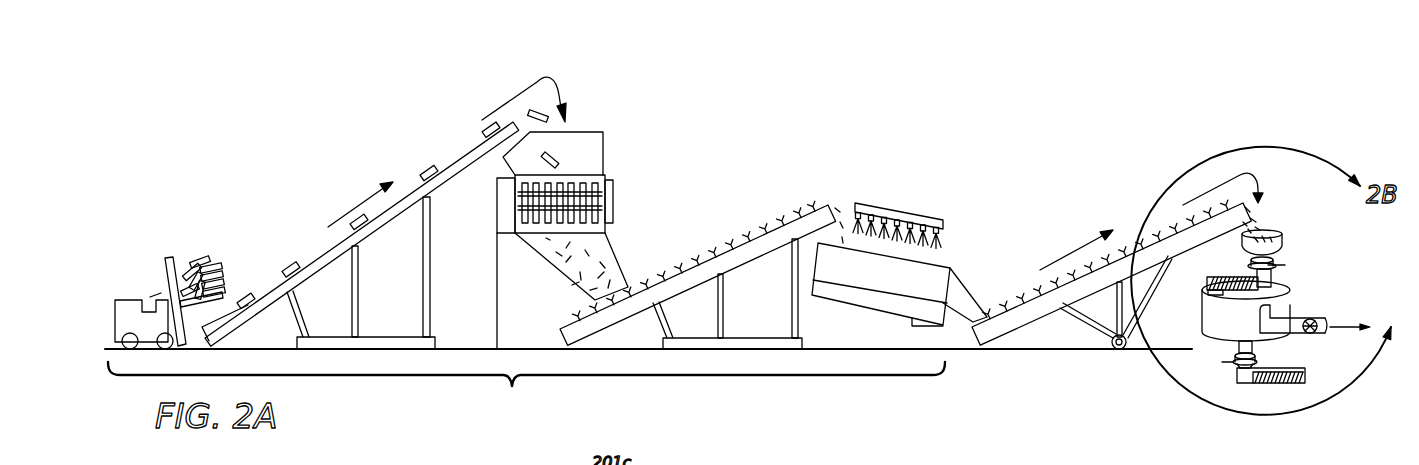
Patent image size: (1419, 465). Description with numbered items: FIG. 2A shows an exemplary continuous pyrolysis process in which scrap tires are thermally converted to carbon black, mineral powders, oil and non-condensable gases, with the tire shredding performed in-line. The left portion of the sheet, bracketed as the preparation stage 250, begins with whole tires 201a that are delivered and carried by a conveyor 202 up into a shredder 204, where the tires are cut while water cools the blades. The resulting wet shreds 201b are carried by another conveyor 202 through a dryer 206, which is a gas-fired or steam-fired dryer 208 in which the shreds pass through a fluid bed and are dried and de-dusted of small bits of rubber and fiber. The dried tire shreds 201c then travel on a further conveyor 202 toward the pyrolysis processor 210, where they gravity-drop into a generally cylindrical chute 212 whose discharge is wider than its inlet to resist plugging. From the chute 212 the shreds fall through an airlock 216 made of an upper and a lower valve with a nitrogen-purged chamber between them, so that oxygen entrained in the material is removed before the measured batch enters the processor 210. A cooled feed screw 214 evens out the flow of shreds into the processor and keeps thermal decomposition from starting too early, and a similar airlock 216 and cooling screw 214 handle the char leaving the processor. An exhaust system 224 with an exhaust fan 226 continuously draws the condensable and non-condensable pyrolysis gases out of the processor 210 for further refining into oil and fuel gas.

The tires 201a is at (200, 257).
The wet shreds 201b is at (692, 268).
The tire shreds 201c is at (1220, 203).
The conveyor 202 is at (468, 155).
The shredder 204 is at (624, 163).
The dryer 206 is at (842, 265).
The gas-fired or steam-fired dryer 208 is at (946, 209).
The pyrolysis processor 210 is at (1204, 312).
The chute 212 is at (1283, 232).
The feed screw 214 is at (1286, 384).
The airlock 216 is at (1253, 266).
The exhaust system 224 is at (1285, 325).
The exhaust fan 226 is at (1313, 312).
The tire preparation 250 is at (526, 389).